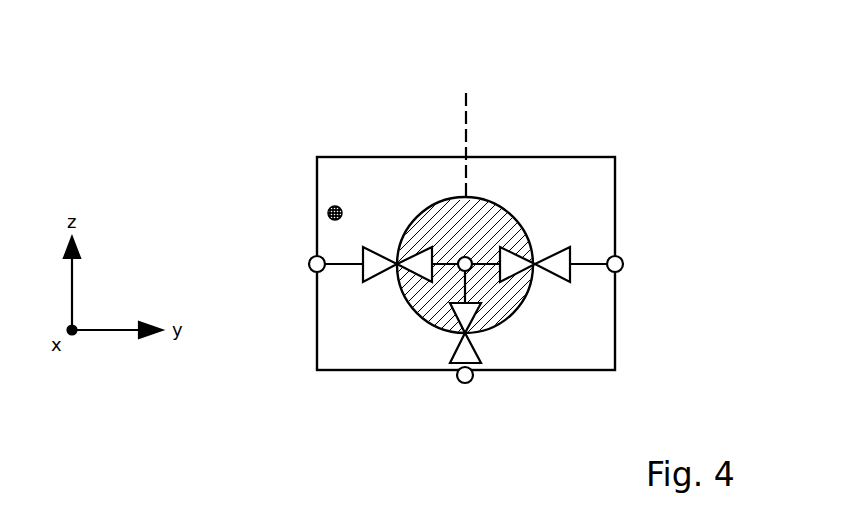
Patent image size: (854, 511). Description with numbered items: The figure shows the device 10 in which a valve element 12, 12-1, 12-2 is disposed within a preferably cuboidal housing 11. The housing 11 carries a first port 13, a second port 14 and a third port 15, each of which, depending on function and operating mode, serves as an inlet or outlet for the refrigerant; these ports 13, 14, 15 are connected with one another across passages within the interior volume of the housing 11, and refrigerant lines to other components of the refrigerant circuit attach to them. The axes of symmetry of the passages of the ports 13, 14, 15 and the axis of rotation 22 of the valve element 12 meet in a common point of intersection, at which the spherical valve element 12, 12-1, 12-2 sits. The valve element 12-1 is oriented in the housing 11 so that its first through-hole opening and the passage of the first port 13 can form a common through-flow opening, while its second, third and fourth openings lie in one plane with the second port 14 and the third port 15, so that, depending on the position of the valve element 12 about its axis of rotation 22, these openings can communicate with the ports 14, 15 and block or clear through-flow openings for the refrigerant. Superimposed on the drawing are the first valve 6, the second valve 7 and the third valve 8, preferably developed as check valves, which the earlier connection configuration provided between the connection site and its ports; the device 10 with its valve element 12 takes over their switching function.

The device 10 is at (645, 143).
The housing 11 is at (330, 208).
The valve element 12 is at (445, 244).
The valve element 12-1 is at (445, 298).
The valve element 12-2 is at (432, 207).
The axis of rotation 22 is at (467, 147).
The second valve 7 is at (372, 281).
The third valve 8 is at (559, 282).
The first valve 6 is at (476, 348).
The second port 14 is at (310, 270).
The third port 15 is at (622, 259).
The first port 13 is at (462, 383).